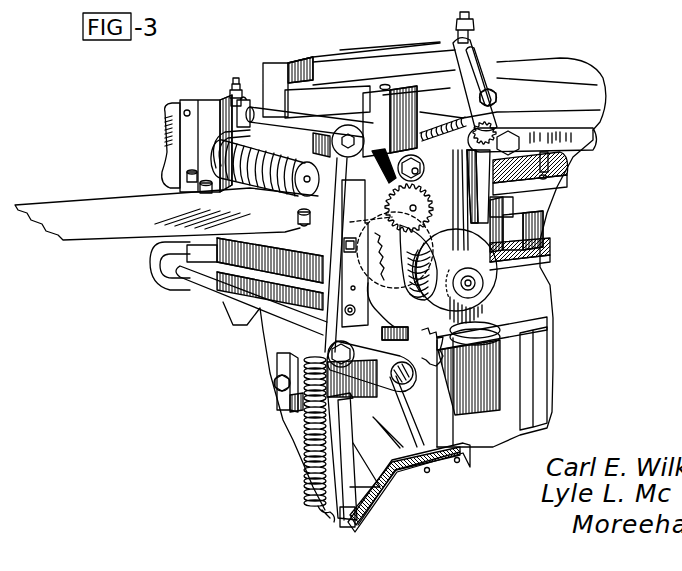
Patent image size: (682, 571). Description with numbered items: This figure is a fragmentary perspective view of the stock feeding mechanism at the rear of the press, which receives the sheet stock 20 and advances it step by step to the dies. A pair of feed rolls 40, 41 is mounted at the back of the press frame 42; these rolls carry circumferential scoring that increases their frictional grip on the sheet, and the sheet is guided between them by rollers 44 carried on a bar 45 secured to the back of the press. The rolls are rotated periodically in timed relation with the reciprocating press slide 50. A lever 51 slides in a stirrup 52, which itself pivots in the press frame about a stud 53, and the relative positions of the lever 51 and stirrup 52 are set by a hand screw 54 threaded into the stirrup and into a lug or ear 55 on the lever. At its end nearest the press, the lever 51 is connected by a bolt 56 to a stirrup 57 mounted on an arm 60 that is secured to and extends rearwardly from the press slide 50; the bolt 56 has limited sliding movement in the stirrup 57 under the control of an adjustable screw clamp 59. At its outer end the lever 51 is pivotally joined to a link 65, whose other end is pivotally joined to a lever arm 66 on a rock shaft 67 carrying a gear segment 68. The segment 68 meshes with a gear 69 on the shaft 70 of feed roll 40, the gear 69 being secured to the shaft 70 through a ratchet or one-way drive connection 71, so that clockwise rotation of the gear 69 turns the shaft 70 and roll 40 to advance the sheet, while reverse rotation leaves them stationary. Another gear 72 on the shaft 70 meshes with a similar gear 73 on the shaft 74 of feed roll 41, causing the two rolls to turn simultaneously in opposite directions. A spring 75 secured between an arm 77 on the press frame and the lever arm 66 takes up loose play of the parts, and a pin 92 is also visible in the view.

The sheet 20 is at (48, 212).
The feed roll 40 is at (250, 258).
The feed roll 41 is at (222, 158).
The press frame 42 is at (236, 72).
The rollers 44 is at (187, 172).
The bar 45 is at (199, 190).
The press slide 50 is at (596, 100).
The lever 51 is at (447, 92).
The stirrup 52 is at (398, 95).
The stud 53 is at (424, 172).
The hand screw 54 is at (425, 95).
The lug or ear 55 is at (350, 109).
The bolt 56 is at (498, 98).
The stirrup 57 is at (490, 55).
The adjustable screw clamp 59 is at (470, 50).
The arm 60 is at (598, 134).
The link 65 is at (300, 325).
The lever arm 66 is at (310, 415).
The rock shaft 67 is at (400, 380).
The gear segment 68 is at (455, 395).
The gear 69 is at (430, 257).
The shaft 70 is at (476, 282).
The ratchet or one-way drive connection 71 is at (512, 262).
The gear 72 is at (386, 275).
The gear 73 is at (420, 199).
The shaft 74 is at (410, 207).
The spring 75 is at (304, 472).
The arm 77 is at (360, 528).
The pin 92 is at (550, 166).